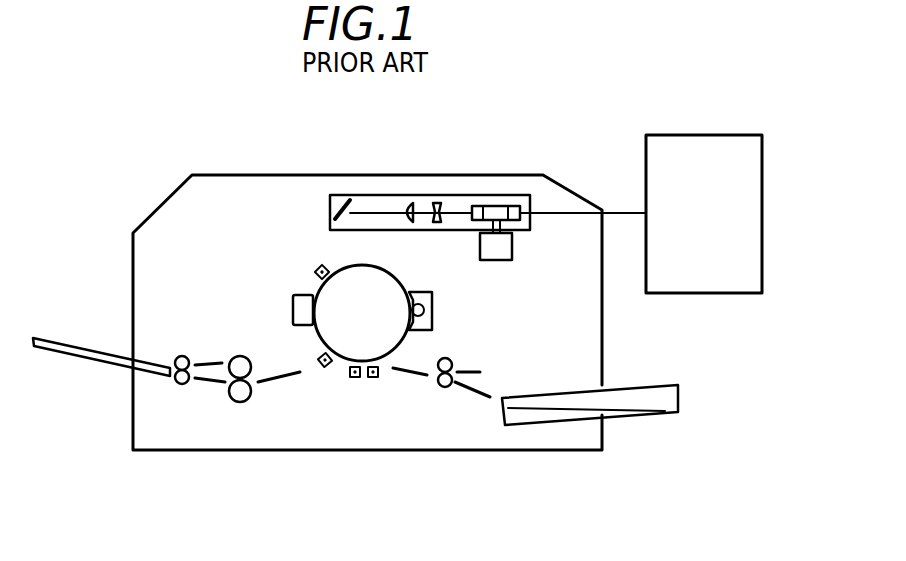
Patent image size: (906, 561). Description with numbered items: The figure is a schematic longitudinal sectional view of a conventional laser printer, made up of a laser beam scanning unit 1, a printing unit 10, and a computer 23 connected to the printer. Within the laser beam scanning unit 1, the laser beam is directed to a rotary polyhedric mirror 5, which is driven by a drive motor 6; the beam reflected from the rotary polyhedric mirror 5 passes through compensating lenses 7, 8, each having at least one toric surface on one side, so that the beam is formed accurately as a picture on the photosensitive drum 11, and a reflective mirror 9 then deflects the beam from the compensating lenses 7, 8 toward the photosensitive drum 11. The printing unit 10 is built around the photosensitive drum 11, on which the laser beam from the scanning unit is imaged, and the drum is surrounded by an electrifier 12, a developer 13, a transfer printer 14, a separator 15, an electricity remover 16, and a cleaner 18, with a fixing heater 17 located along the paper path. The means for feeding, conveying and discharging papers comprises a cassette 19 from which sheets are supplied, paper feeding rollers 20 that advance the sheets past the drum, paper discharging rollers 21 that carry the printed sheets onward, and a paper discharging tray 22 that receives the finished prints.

The laser beam scanning unit 1 is at (524, 196).
The rotary polyhedric mirror 5 is at (498, 206).
The drive motor 6 is at (508, 250).
The compensating lens 7 is at (443, 200).
The compensating lens 8 is at (413, 200).
The reflective mirror 9 is at (353, 265).
The printing unit 10 is at (338, 372).
The photosensitive drum 11 is at (338, 265).
The electrifier 12 is at (318, 266).
The developer 13 is at (434, 312).
The transfer printer 14 is at (377, 380).
The separator 15 is at (355, 380).
The electricity remover 16 is at (323, 368).
The fixing heater 17 is at (236, 403).
The cleaner 18 is at (293, 300).
The cassette 19 is at (657, 412).
The paper feeding rollers 20 is at (446, 390).
The paper discharging rollers 21 is at (180, 384).
The paper discharging tray 22 is at (78, 355).
The computer 23 is at (762, 225).